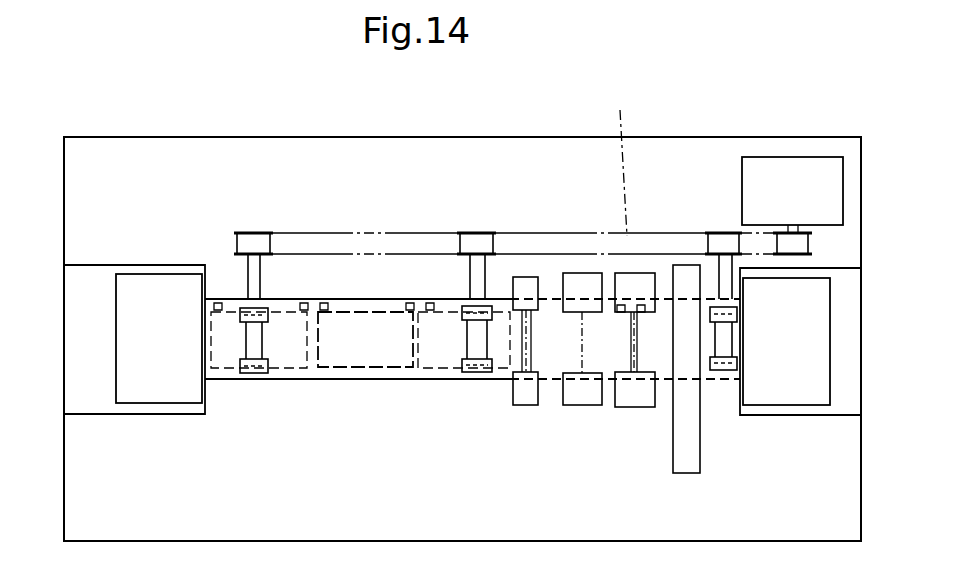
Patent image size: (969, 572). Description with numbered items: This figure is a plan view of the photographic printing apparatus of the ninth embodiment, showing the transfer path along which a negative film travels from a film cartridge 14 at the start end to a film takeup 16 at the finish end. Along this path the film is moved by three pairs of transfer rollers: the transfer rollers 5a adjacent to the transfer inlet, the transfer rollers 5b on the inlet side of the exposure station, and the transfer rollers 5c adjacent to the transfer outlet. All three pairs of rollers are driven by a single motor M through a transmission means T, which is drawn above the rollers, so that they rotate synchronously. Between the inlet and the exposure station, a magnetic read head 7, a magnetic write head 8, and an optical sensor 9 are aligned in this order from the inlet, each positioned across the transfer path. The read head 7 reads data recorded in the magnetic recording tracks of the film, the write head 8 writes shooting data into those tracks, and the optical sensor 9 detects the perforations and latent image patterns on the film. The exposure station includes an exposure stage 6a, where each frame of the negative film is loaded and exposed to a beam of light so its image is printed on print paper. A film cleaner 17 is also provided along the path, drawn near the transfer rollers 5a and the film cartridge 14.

The film takeup 16 is at (141, 289).
The film cartridge 14 is at (807, 390).
The motor M is at (805, 170).
The transmission means T is at (617, 159).
The transfer rollers 5a is at (720, 372).
The transfer rollers 5b is at (470, 378).
The transfer rollers 5c is at (250, 378).
The exposure stage 6a is at (340, 378).
The optical sensor 9 is at (528, 290).
The magnetic write head 8 is at (586, 280).
The magnetic read head 7 is at (642, 282).
The film cleaner 17 is at (677, 470).